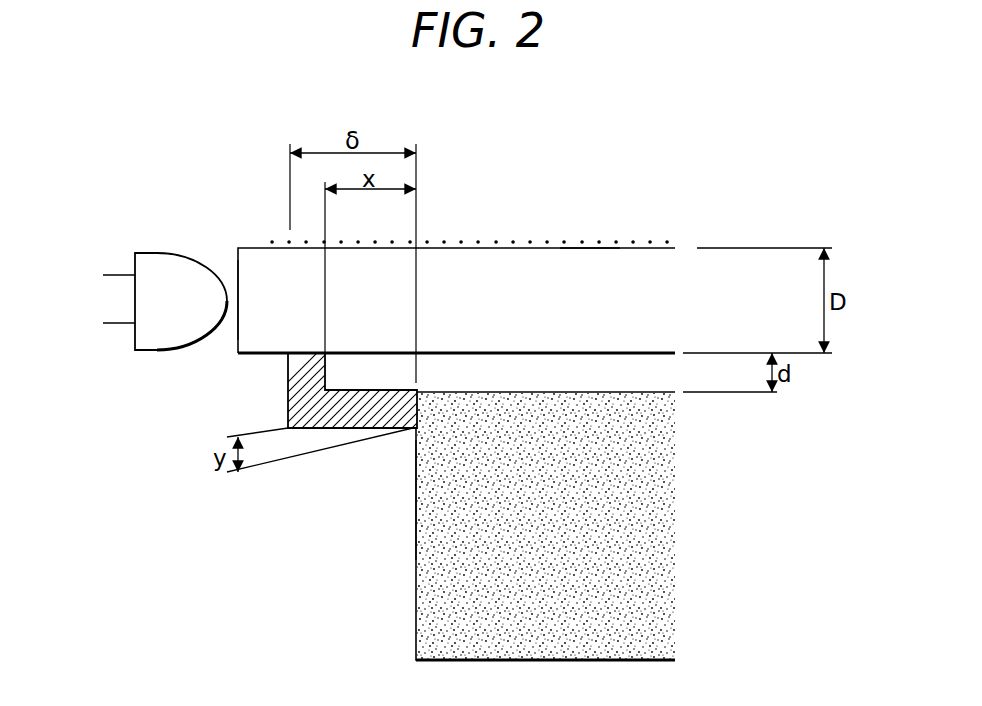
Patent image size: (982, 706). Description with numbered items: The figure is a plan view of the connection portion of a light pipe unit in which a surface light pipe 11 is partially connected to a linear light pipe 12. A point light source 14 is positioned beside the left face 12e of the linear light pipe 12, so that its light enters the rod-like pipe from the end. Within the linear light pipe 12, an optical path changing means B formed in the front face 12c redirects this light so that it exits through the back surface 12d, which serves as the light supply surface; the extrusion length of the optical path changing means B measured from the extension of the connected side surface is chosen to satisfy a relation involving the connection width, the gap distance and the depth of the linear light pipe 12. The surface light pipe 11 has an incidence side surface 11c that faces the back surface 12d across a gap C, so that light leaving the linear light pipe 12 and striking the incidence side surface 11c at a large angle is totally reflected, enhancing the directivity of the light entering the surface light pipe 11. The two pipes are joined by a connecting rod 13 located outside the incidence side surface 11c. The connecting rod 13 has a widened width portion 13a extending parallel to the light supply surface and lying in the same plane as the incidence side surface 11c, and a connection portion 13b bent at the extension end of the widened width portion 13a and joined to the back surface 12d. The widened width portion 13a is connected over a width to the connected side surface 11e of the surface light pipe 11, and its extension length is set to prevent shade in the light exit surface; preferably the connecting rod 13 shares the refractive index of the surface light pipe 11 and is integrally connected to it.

The point light source 14 is at (143, 253).
The linear light pipe 12 is at (467, 273).
The left face of linear light pipe 12e is at (237, 272).
The front face of linear light pipe 12c is at (588, 247).
The back surface of linear light pipe 12d is at (607, 352).
The optical path changing means B is at (532, 242).
The surface light pipe 11 is at (635, 542).
The incidence side surface 11c is at (632, 391).
The connected side surface 11e is at (416, 503).
The gap C is at (520, 368).
The connecting rod 13 is at (313, 409).
The connection portion 13b is at (295, 374).
The widened width portion 13a is at (367, 430).